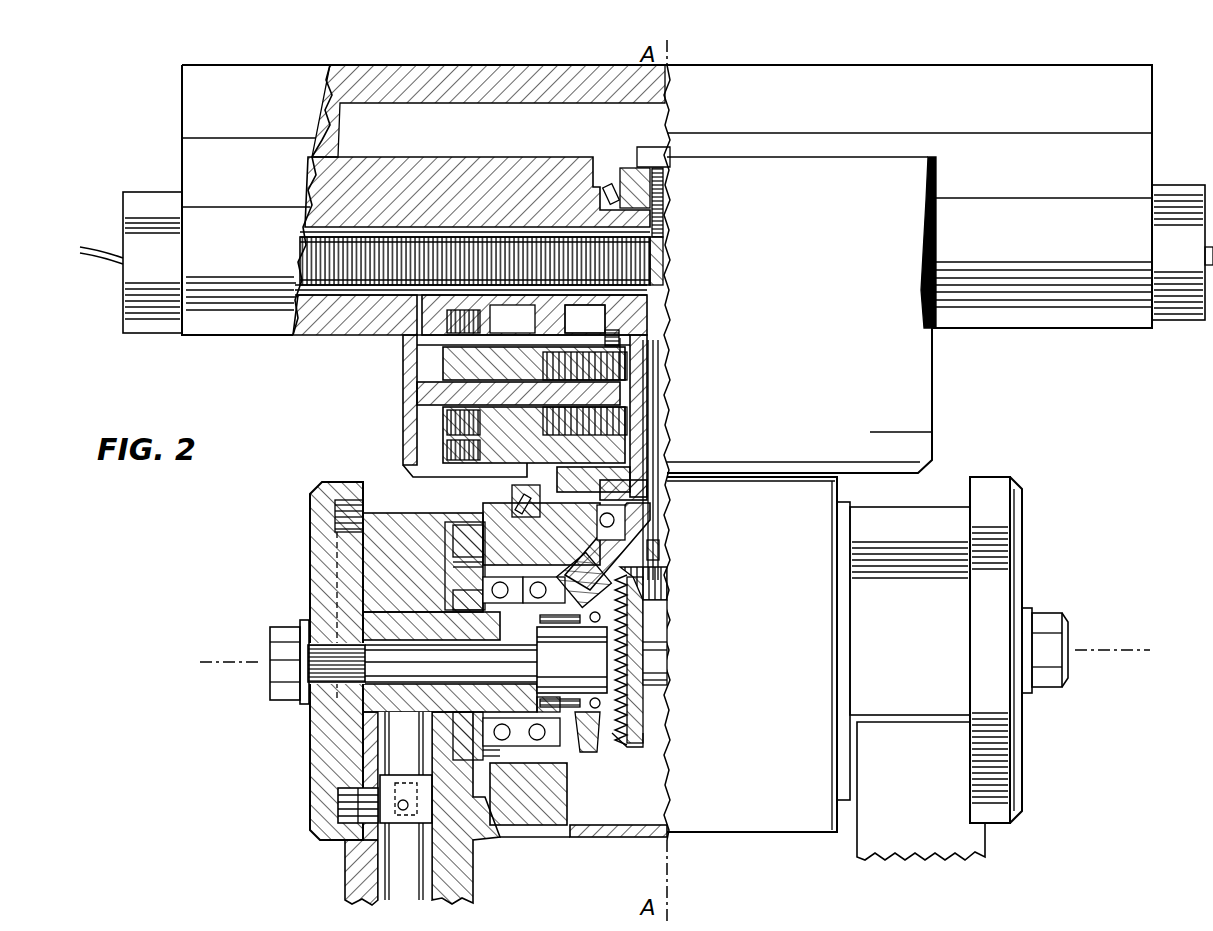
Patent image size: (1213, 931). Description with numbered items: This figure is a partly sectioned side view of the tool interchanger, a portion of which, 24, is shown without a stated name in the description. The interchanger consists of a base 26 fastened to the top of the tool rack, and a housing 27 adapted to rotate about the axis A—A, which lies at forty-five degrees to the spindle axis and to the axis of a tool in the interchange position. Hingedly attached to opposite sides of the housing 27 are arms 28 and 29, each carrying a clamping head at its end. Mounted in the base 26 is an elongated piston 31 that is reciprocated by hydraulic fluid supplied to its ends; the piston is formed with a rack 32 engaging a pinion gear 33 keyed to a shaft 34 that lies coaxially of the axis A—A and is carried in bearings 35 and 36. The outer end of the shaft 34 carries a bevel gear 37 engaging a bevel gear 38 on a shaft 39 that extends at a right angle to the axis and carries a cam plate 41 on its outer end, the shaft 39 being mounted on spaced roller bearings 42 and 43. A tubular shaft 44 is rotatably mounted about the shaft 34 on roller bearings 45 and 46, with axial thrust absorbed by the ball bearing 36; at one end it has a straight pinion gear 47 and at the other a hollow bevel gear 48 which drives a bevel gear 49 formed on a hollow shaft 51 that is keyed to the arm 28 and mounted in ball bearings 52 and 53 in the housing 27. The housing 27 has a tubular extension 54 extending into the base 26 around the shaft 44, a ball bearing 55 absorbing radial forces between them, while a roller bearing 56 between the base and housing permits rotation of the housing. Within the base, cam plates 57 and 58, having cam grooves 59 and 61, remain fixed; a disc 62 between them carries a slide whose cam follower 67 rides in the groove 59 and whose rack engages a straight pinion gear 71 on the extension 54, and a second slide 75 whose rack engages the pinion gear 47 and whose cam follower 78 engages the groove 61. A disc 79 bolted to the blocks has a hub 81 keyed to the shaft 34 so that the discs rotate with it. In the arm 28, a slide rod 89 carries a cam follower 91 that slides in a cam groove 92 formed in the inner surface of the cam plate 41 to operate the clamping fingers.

The electric motor 24 is at (800, 835).
The base 26 is at (922, 402).
The housing 27 is at (705, 837).
The arm 28 is at (345, 878).
The arm 29 is at (920, 862).
The elongated piston 31 is at (295, 258).
The rack 32 is at (437, 243).
The pinion gear 33 is at (665, 262).
The shaft 34 is at (665, 200).
The bearing 35 is at (615, 190).
The ball bearing 36 is at (660, 548).
The bevel gear 37 is at (645, 590).
The bevel gear 38 is at (633, 747).
The shaft 39 is at (330, 685).
The cam plate 41 is at (312, 768).
The roller bearing 42 is at (388, 627).
The roller bearing 43 is at (560, 690).
The tubular shaft 44 is at (640, 430).
The roller bearing 45 is at (656, 527).
The roller bearing 46 is at (647, 365).
The straight pinion gear 47 is at (647, 345).
The hollow bevel gear 48 is at (652, 572).
The bevel gear 49 is at (587, 745).
The hollow shaft 51 is at (358, 622).
The ball bearing 52 is at (503, 567).
The ball bearing 53 is at (544, 567).
The tubular extension 54 is at (640, 470).
The ball bearing 55 is at (655, 508).
The roller bearing 56 is at (522, 500).
The cam plate 57 is at (534, 435).
The cam plate 58 is at (585, 319).
The cam groove 59 is at (447, 462).
The cam groove 61 is at (486, 321).
The disc 62 is at (417, 393).
The cam follower 67 is at (440, 440).
The straight pinion gear 71 is at (625, 415).
The slide 75 is at (534, 363).
The cam follower 78 is at (450, 313).
The disc 79 is at (648, 335).
The hub 81 is at (647, 303).
The slide rod 89 is at (437, 870).
The cam follower 91 is at (335, 805).
The cam groove 92 is at (352, 482).